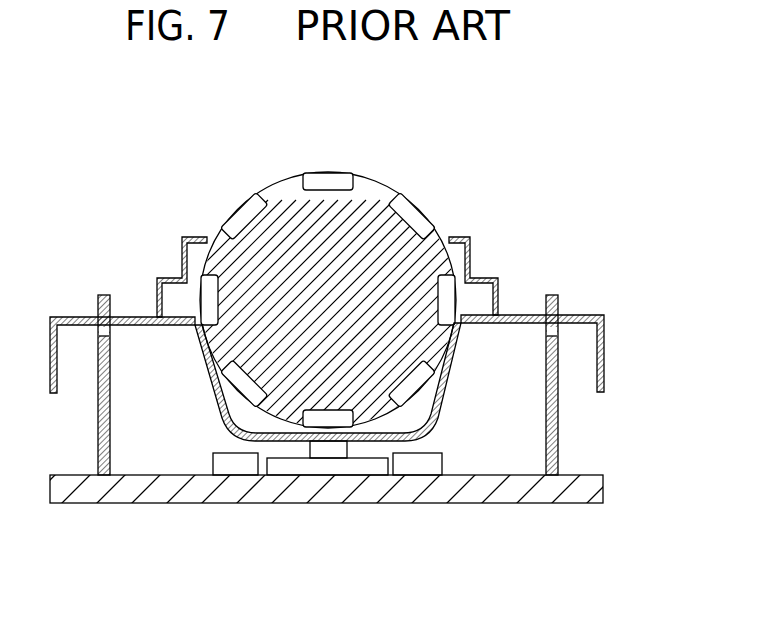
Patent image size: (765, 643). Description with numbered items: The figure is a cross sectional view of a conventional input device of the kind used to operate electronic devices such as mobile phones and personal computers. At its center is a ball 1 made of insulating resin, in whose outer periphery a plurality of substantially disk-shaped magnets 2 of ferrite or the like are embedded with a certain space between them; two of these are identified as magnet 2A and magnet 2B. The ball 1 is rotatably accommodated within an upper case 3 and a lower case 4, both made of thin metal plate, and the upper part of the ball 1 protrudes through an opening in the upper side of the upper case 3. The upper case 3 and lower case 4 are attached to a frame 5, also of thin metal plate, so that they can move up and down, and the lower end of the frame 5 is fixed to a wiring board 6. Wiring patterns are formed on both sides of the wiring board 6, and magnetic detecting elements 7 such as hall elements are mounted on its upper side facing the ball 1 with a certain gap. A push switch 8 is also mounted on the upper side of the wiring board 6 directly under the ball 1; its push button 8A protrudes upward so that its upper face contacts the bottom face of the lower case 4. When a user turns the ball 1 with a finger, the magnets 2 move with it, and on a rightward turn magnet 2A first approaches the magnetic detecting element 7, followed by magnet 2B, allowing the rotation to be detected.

The ball 1 is at (277, 195).
The magnets 2 is at (318, 266).
The magnet 2A is at (423, 380).
The magnet 2B is at (450, 300).
The upper case 3 is at (477, 267).
The lower case 4 is at (583, 323).
The frame 5 is at (555, 420).
The wiring board 6 is at (530, 492).
The magnetic detecting elements 7 is at (414, 465).
The push switch 8 is at (285, 468).
The push button 8A is at (335, 450).